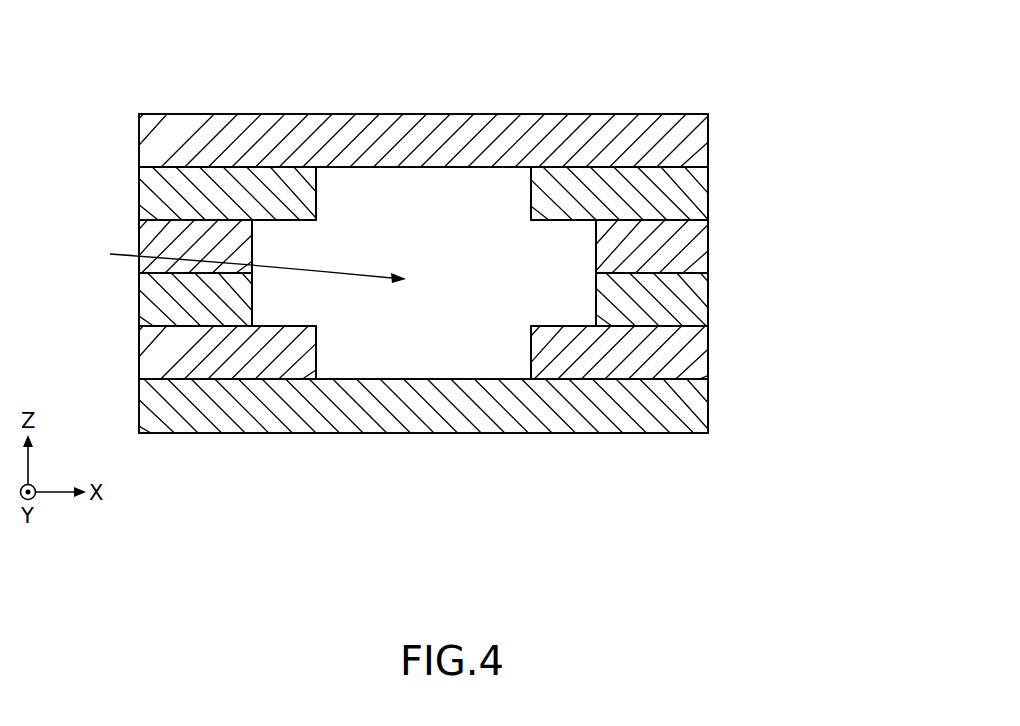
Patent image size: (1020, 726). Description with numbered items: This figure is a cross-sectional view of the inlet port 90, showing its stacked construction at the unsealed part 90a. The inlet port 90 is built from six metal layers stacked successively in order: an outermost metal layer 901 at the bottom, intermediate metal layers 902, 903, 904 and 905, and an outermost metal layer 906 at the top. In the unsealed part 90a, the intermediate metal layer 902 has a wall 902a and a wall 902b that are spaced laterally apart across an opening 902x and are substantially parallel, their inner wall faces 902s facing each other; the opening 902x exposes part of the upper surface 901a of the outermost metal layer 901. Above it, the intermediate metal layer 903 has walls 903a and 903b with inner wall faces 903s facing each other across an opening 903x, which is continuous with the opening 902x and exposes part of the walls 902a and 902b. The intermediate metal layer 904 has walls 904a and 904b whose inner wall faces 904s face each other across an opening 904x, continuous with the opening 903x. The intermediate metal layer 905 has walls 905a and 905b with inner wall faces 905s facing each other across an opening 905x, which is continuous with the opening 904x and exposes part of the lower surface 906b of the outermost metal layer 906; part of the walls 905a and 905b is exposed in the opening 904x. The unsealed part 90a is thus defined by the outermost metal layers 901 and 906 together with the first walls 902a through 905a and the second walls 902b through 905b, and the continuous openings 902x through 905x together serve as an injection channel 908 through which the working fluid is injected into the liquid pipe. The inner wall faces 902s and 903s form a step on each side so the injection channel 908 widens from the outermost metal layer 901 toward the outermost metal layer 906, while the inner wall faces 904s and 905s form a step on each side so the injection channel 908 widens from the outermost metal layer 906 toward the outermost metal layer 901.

The inlet port 90 is at (770, 82).
The unsealed part 90a is at (822, 109).
The outermost metal layer 901 is at (722, 403).
The upper surface of outermost metal layer 901a is at (155, 380).
The intermediate metal layer 902 is at (722, 349).
The wall 902a is at (175, 355).
The wall 902b is at (621, 355).
The inner wall faces 902s is at (316, 357).
The opening 902x is at (432, 353).
The intermediate metal layer 903 is at (722, 296).
The wall 903a is at (207, 303).
The wall 903b is at (652, 302).
The inner wall faces 903s is at (253, 300).
The opening 903x is at (409, 300).
The intermediate metal layer 904 is at (722, 243).
The wall 904a is at (205, 243).
The wall 904b is at (652, 247).
The inner wall faces 904s is at (253, 247).
The opening 904x is at (409, 248).
The intermediate metal layer 905 is at (722, 189).
The wall 905a is at (176, 192).
The wall 905b is at (621, 197).
The inner wall faces 905s is at (317, 197).
The opening 905x is at (430, 195).
The outermost metal layer 906 is at (722, 137).
The lower surface of outermost metal layer 906b is at (153, 172).
The injection channel 908 is at (236, 262).